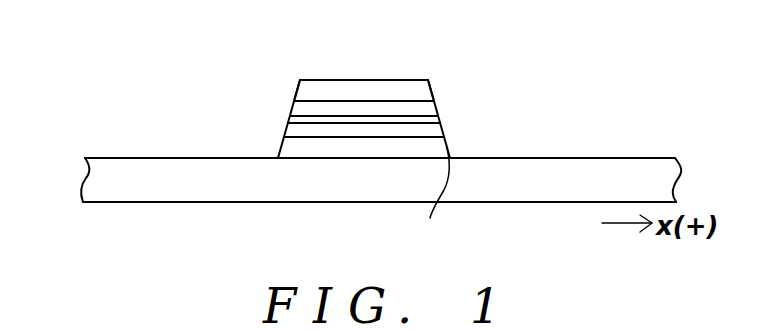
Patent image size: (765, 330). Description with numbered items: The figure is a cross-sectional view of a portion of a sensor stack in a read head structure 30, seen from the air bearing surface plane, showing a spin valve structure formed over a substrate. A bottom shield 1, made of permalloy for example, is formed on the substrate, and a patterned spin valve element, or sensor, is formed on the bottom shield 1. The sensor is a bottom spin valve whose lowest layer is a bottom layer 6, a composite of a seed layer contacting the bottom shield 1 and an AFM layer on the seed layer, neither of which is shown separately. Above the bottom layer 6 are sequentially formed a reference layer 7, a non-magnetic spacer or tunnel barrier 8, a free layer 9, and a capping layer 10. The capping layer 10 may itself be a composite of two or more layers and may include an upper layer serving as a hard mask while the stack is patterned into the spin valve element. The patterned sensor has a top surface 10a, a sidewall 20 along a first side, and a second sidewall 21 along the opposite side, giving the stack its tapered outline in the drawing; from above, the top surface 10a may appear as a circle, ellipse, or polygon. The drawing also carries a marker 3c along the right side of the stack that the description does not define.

The bottom shield 1 is at (95, 182).
The bottom layer 6 is at (428, 147).
The reference layer 7 is at (300, 127).
The non-magnetic spacer or tunnel barrier 8 is at (298, 122).
The free layer 9 is at (302, 108).
The capping layer 10 is at (360, 87).
The top surface 10a is at (310, 79).
The sidewall 20 is at (296, 95).
The second sidewall 21 is at (432, 92).
The boundary line 3c is at (431, 197).
The read head structure 30 is at (573, 68).